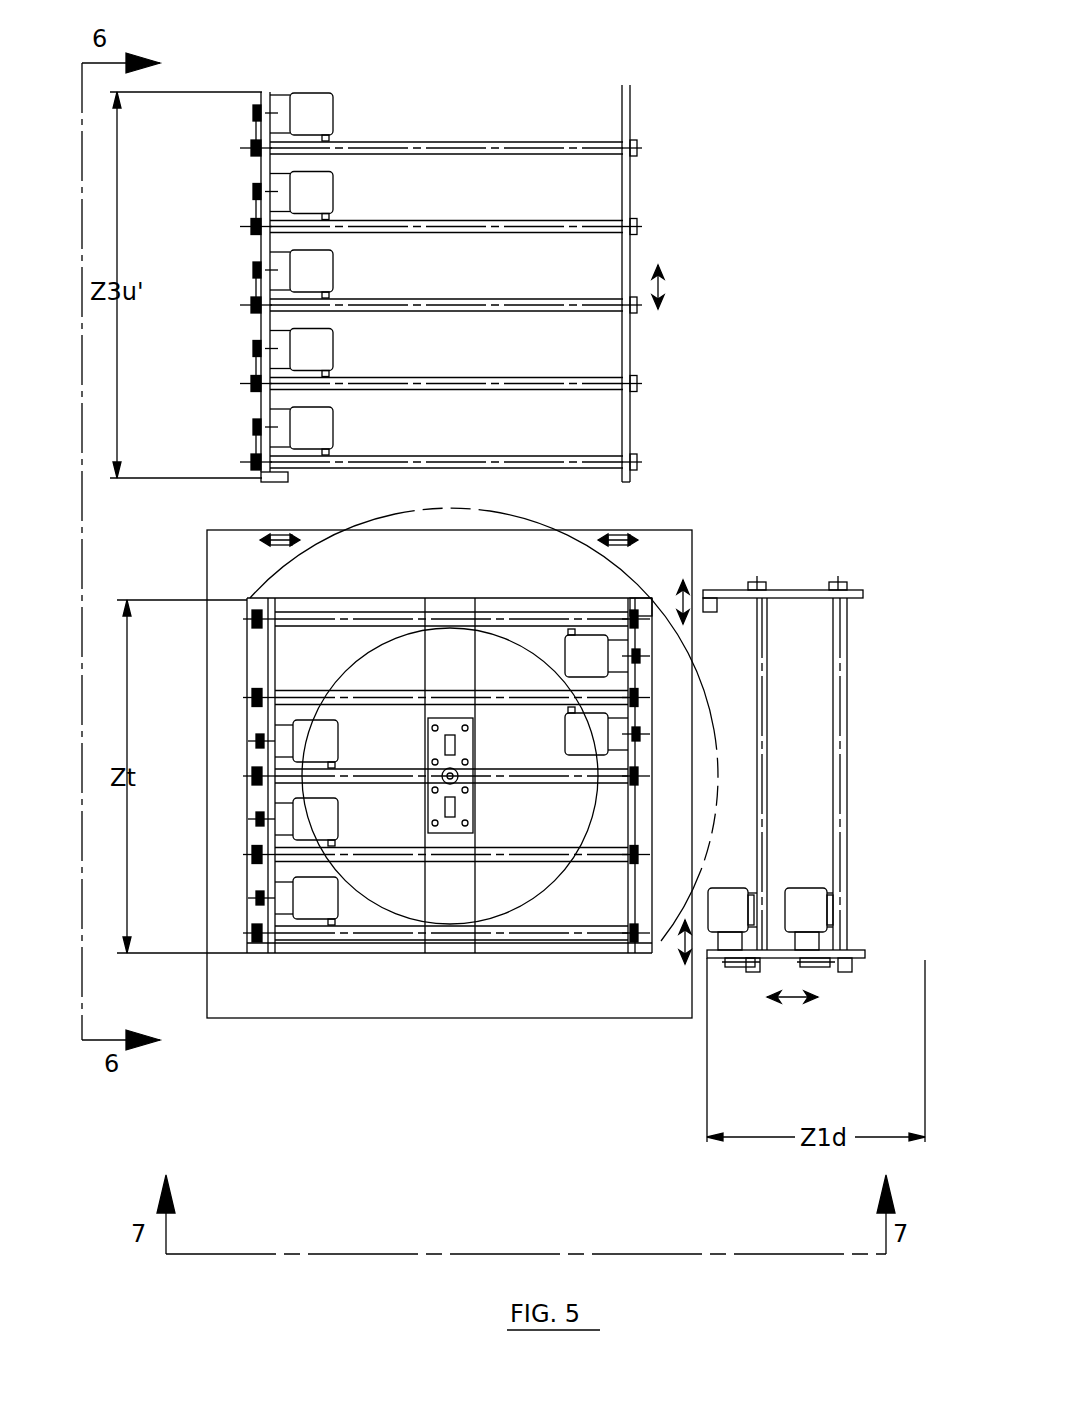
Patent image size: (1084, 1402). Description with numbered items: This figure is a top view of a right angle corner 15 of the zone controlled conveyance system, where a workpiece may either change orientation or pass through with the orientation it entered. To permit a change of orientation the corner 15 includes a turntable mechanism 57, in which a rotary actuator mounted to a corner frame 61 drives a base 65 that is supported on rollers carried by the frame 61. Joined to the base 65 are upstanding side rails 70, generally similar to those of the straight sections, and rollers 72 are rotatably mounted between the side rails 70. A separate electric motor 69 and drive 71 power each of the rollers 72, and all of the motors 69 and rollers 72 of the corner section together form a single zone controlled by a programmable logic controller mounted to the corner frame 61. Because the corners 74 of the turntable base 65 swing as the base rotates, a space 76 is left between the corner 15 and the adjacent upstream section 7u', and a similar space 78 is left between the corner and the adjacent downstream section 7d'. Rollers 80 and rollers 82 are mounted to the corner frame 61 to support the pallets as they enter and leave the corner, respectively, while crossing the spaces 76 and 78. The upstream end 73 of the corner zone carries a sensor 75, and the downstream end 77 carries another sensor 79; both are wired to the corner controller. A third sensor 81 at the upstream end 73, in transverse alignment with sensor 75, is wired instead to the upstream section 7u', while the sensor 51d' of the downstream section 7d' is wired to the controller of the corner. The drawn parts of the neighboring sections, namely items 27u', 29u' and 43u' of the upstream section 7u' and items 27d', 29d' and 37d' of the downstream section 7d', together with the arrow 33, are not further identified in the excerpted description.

The adjacent upstream section 7u' is at (509, 283).
The adjacent downstream section 7d' is at (784, 861).
The upper drive shafts 27u' is at (382, 305).
The lower drive shafts 27d' is at (859, 774).
The upper drive motors 29u' is at (227, 276).
The lower drive motors 29d' is at (835, 895).
The upper unit bottom plate 43u' is at (206, 466).
The sensor 51d' is at (805, 566).
The lower unit bearings 37d' is at (783, 1022).
The direction of movement arrow 33 is at (665, 290).
The right angle corner 15 is at (207, 993).
The corner frame 61 is at (424, 1022).
The turntable mechanism 57 is at (368, 955).
The base 65 is at (305, 947).
The electric motor 69 is at (312, 742).
The side rails 70 is at (270, 660).
The drive 71 is at (652, 728).
The rollers 72 is at (450, 598).
The upstream end 73 is at (340, 597).
The corners 74 is at (692, 597).
The sensor 75 is at (250, 598).
The space 76 is at (592, 515).
The downstream end 77 is at (530, 940).
The space 78 is at (740, 675).
The sensor 79 is at (283, 946).
The rollers 80 is at (282, 538).
The third sensor 81 is at (652, 598).
The rollers 82 is at (691, 590).